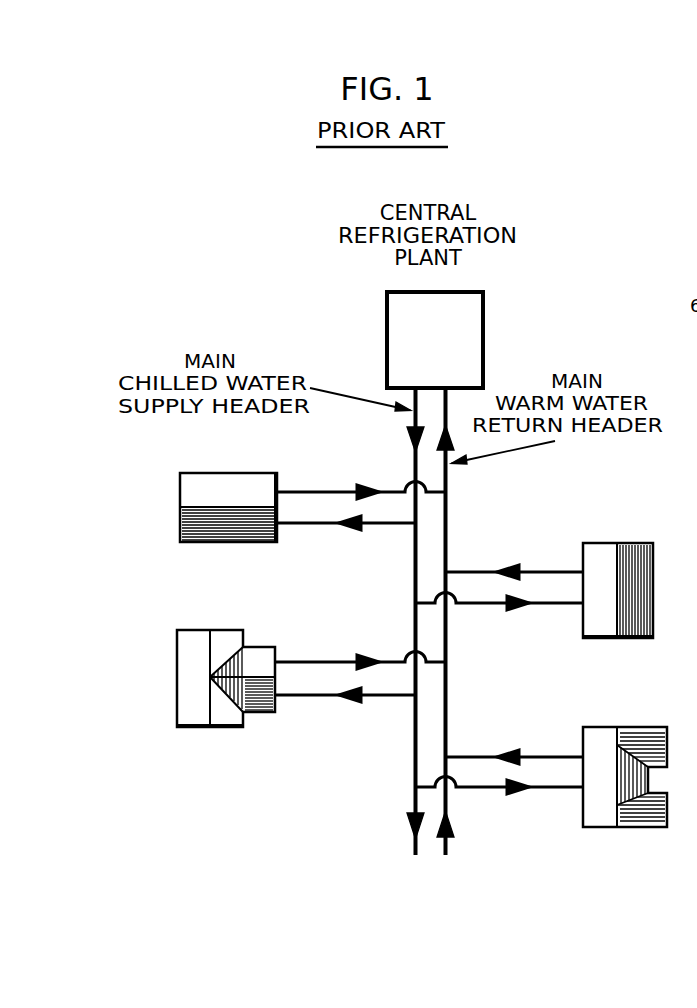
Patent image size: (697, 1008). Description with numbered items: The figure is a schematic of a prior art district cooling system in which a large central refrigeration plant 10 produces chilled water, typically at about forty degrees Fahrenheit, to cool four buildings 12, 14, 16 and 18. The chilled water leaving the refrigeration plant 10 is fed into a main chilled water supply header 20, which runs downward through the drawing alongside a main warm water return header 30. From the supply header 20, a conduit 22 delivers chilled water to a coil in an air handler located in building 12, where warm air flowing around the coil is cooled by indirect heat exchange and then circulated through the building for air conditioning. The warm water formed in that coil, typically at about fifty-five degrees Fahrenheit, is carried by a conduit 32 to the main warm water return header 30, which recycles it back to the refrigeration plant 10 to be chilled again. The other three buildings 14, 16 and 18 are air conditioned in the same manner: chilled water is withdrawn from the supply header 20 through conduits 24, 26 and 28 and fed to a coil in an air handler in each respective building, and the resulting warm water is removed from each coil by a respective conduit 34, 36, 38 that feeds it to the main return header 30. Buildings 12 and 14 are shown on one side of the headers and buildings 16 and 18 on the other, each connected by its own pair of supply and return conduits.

The central refrigeration plant 10 is at (483, 312).
The building 12 is at (180, 488).
The building 14 is at (177, 678).
The building 16 is at (640, 590).
The building 18 is at (667, 781).
The main chilled water supply header 20 is at (415, 547).
The main warm water return header 30 is at (446, 524).
The conduit 22 is at (313, 523).
The conduit 24 is at (312, 695).
The conduit 26 is at (490, 603).
The conduit 28 is at (485, 787).
The conduit 32 is at (317, 492).
The conduit 34 is at (308, 662).
The conduit 36 is at (478, 572).
The conduit 38 is at (472, 757).